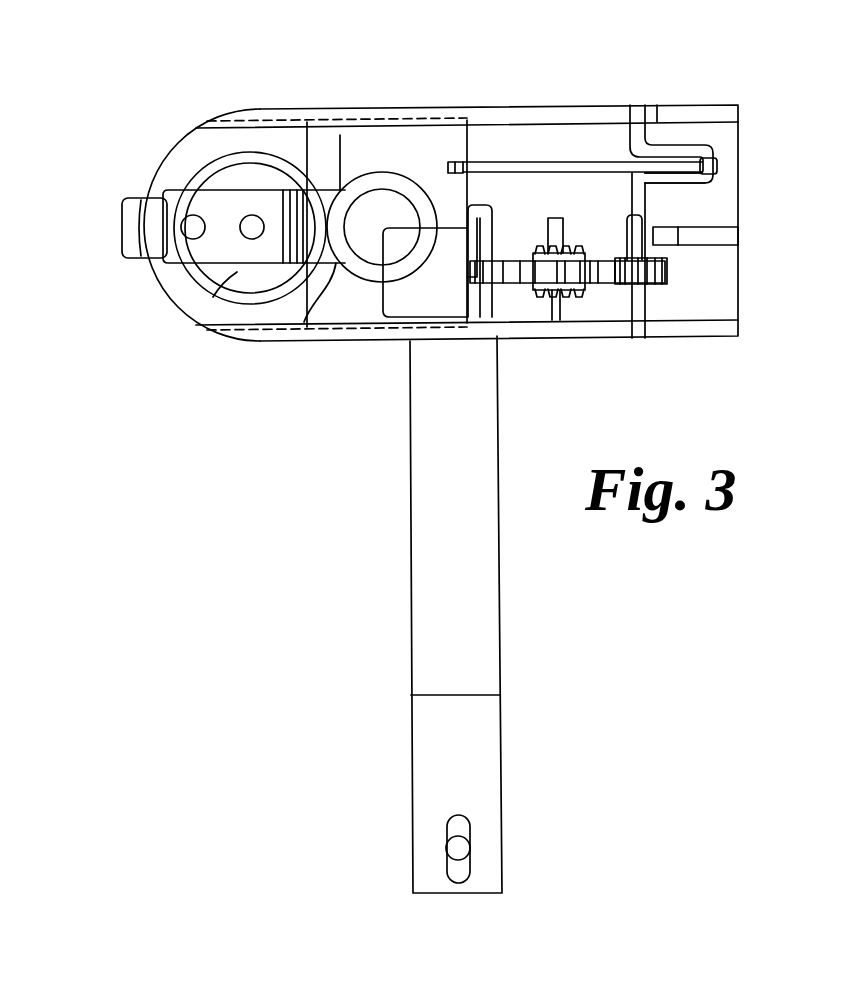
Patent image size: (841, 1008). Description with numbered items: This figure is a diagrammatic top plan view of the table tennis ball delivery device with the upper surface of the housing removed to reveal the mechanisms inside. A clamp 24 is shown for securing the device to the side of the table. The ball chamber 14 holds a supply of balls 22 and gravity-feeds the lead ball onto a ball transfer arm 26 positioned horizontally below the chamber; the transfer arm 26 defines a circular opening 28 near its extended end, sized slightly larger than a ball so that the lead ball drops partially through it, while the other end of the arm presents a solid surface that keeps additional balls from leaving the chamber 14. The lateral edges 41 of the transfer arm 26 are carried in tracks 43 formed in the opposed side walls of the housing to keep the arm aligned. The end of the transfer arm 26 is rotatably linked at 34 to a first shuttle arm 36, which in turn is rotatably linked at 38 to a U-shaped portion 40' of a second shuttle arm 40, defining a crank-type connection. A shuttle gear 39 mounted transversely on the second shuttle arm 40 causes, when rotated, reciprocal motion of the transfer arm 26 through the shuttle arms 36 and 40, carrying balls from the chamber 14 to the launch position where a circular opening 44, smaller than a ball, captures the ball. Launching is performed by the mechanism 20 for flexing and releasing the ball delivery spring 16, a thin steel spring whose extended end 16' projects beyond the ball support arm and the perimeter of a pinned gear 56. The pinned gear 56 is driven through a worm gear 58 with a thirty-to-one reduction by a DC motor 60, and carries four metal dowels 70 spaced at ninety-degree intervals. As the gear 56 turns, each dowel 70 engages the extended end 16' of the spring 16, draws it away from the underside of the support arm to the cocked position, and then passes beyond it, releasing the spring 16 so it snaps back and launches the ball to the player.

The ball chamber 14 is at (200, 163).
The ball delivery spring 16 is at (254, 311).
The extended end of delivery spring 16' is at (417, 320).
The mechanism for flexing and releasing the spring 20 is at (122, 212).
The balls 22 is at (414, 254).
The clamp 24 is at (502, 738).
The ball transfer arm 26 is at (340, 135).
The circular opening 28 is at (382, 175).
The rotatable link 34 is at (470, 165).
The first shuttle arm 36 is at (600, 163).
The rotatable link 38 is at (713, 147).
The shuttle gear 39 is at (668, 271).
The second shuttle arm 40 is at (717, 255).
The U-shaped portion of second shuttle arm 40' is at (735, 205).
The lateral edges of transfer arm 41 is at (302, 123).
The tracks 43 is at (265, 128).
The circular opening 44 is at (417, 233).
The pinned gear 56 is at (605, 284).
The worm gear 58 is at (572, 290).
The DC motor 60 is at (485, 322).
The metal dowels 70 is at (488, 222).